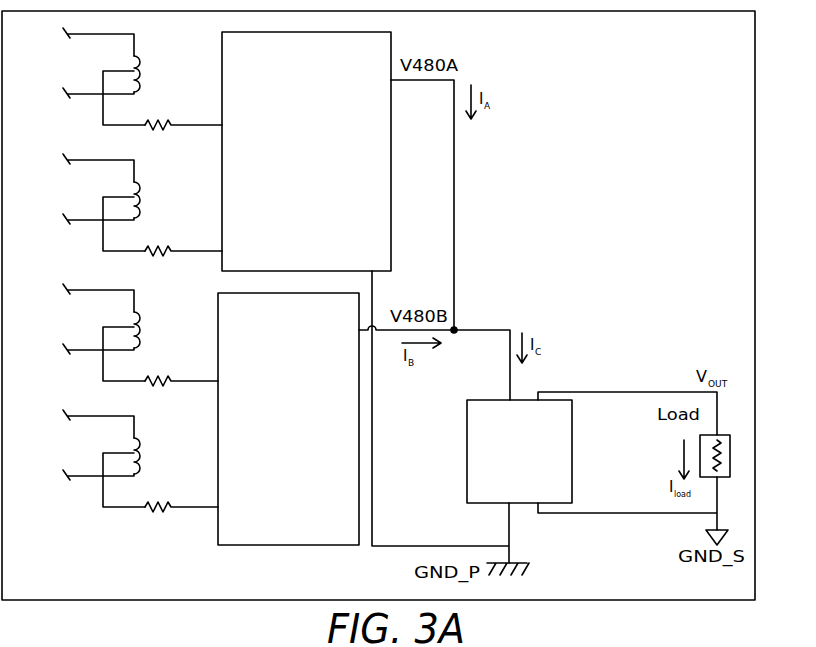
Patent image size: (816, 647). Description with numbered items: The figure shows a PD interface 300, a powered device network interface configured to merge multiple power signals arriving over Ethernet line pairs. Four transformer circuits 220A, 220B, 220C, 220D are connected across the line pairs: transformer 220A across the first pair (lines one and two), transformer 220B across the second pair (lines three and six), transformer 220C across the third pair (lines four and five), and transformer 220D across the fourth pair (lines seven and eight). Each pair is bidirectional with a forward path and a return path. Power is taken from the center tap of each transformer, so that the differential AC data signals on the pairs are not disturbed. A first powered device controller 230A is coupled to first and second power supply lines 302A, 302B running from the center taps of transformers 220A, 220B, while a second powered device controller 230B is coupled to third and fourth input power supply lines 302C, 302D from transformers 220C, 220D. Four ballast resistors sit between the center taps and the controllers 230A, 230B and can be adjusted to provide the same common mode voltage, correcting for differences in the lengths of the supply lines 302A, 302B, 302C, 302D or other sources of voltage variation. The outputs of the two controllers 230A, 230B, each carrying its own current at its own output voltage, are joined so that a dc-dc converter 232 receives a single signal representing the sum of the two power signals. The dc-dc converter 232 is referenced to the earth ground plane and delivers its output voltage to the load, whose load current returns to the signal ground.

The PD interface 300 is at (738, 66).
The transformer circuit 220A is at (140, 71).
The transformer circuit 220B is at (140, 197).
The transformer circuit 220C is at (140, 327).
The transformer circuit 220D is at (140, 453).
The first power supply line 302A is at (207, 127).
The second power supply line 302B is at (207, 253).
The third input power supply line 302C is at (207, 383).
The fourth input power supply line 302D is at (207, 509).
The first powered device controller 230A is at (285, 210).
The second powered device controller 230B is at (267, 488).
The dc-dc converter 232 is at (504, 482).